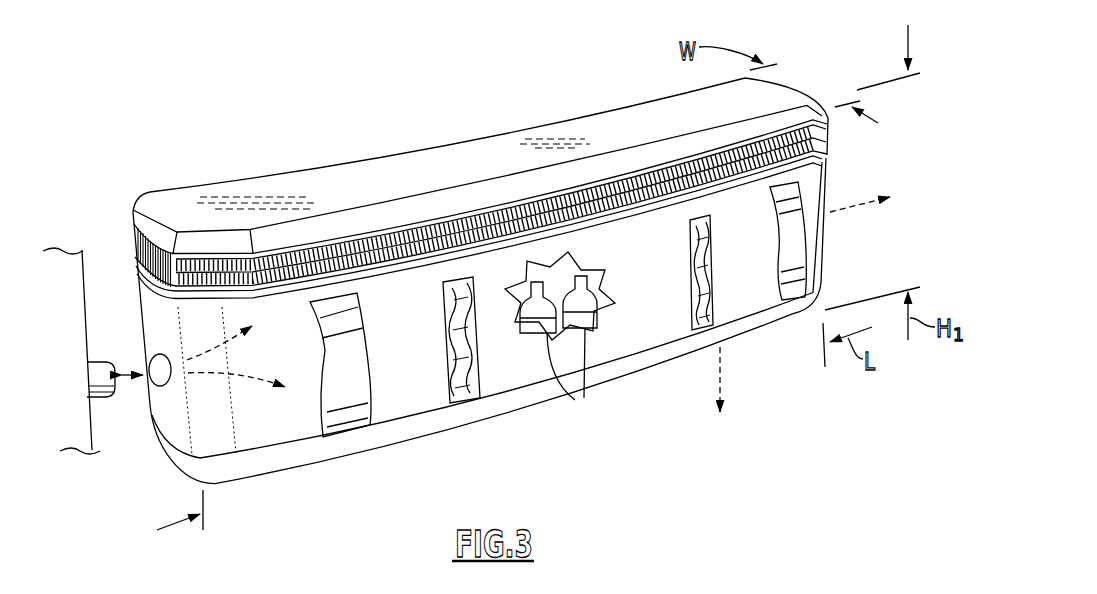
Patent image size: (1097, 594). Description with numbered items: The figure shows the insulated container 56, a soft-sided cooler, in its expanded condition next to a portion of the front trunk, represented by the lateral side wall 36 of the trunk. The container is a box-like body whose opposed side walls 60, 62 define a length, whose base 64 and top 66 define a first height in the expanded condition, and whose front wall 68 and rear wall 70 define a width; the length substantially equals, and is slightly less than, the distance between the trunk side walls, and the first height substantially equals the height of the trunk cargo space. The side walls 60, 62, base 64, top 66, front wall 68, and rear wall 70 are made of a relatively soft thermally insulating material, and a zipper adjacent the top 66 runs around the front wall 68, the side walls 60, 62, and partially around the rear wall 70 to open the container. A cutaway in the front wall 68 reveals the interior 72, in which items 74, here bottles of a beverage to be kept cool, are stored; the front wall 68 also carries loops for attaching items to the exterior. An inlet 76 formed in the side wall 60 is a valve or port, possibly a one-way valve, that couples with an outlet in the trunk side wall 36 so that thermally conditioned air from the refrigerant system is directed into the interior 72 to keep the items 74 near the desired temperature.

The lateral side wall 36 is at (84, 281).
The insulated container 56 is at (381, 466).
The side wall 60 is at (171, 410).
The side wall 62 is at (828, 234).
The base 64 is at (469, 430).
The top 66 is at (347, 176).
The front wall 68 is at (638, 327).
The rear wall 70 is at (459, 143).
The interior 72 is at (601, 281).
The items 74 is at (575, 398).
The inlet 76 is at (158, 370).